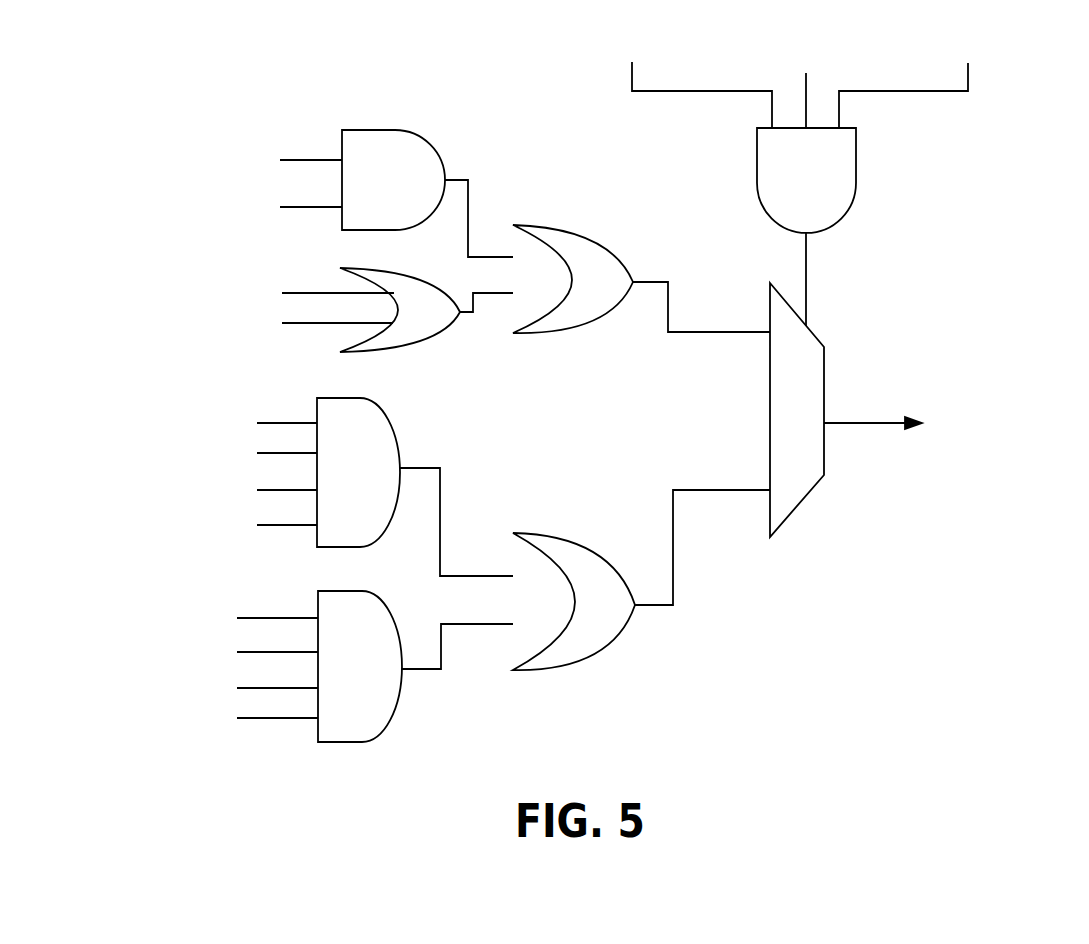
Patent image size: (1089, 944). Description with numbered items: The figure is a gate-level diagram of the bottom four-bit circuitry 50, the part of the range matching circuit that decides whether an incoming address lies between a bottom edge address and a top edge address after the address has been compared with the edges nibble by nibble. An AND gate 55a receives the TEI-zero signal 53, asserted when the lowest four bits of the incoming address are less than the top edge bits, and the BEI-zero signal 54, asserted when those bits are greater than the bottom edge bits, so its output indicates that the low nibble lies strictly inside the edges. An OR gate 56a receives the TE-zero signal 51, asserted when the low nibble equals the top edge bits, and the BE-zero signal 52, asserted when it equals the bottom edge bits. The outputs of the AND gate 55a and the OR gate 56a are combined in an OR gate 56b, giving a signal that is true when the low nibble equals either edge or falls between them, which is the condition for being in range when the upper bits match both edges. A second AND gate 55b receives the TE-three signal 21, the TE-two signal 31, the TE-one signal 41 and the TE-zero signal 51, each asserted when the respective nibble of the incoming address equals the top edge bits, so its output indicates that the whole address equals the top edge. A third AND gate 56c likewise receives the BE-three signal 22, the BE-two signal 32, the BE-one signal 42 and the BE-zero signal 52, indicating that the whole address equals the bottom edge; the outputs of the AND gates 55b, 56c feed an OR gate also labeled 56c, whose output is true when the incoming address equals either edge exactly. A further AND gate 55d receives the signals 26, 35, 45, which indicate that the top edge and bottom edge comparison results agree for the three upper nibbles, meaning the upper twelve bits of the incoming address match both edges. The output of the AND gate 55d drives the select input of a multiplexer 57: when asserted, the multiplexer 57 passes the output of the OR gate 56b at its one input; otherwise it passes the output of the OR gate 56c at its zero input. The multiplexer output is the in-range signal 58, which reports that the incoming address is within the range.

The bottom four-bit circuitry 50 is at (310, 794).
The TEI0 signal 53 is at (255, 161).
The BEI0 signal 54 is at (256, 208).
The TE0 signal 51 is at (251, 409).
The BE0 signal 52 is at (244, 523).
The TE3[15:12] signal 21 is at (199, 423).
The TE2[11:8] signal 31 is at (207, 458).
The TE1 signal 41 is at (214, 492).
The BE3[15:12] signal 22 is at (195, 621).
The BE2[11:8] signal 32 is at (201, 656).
The BE1 signal 42 is at (206, 691).
The TE3 = BE3 compare signal 26 is at (664, 77).
The TE2 = BE2 compare signal 35 is at (807, 79).
The TE1 = BE1 compare signal 45 is at (947, 77).
The AND gate 55a is at (427, 193).
The AND gate 55b is at (415, 487).
The AND gate 55d is at (806, 227).
The OR gate 56a is at (426, 310).
The OR gate 56b is at (641, 279).
The AND gate / OR gate 56c is at (544, 616).
The multiplexer 57 is at (797, 410).
The in range output signal 58 is at (944, 425).